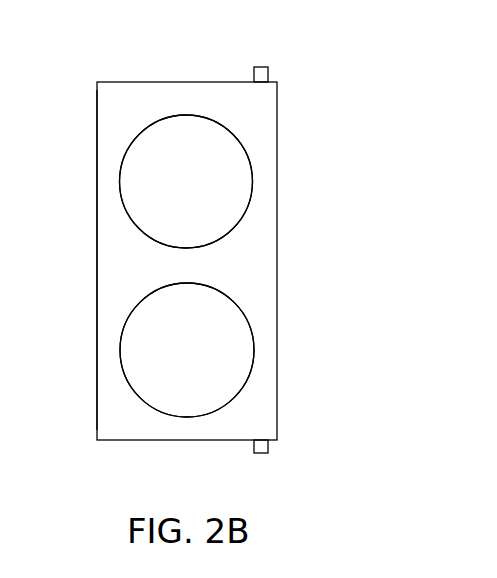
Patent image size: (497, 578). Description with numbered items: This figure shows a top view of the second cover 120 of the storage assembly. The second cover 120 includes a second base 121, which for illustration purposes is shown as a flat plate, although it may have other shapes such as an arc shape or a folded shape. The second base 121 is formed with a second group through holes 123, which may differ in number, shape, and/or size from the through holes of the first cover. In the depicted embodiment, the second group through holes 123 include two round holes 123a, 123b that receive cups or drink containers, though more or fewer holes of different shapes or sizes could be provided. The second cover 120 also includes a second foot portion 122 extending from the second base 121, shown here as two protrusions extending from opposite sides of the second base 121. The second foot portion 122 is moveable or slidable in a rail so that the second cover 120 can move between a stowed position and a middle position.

The second cover 120 is at (133, 82).
The second base 121 is at (112, 264).
The second foot portion 122 is at (262, 67).
The second group through holes 123 is at (233, 204).
The round hole 123a is at (213, 191).
The round hole 123b is at (213, 357).